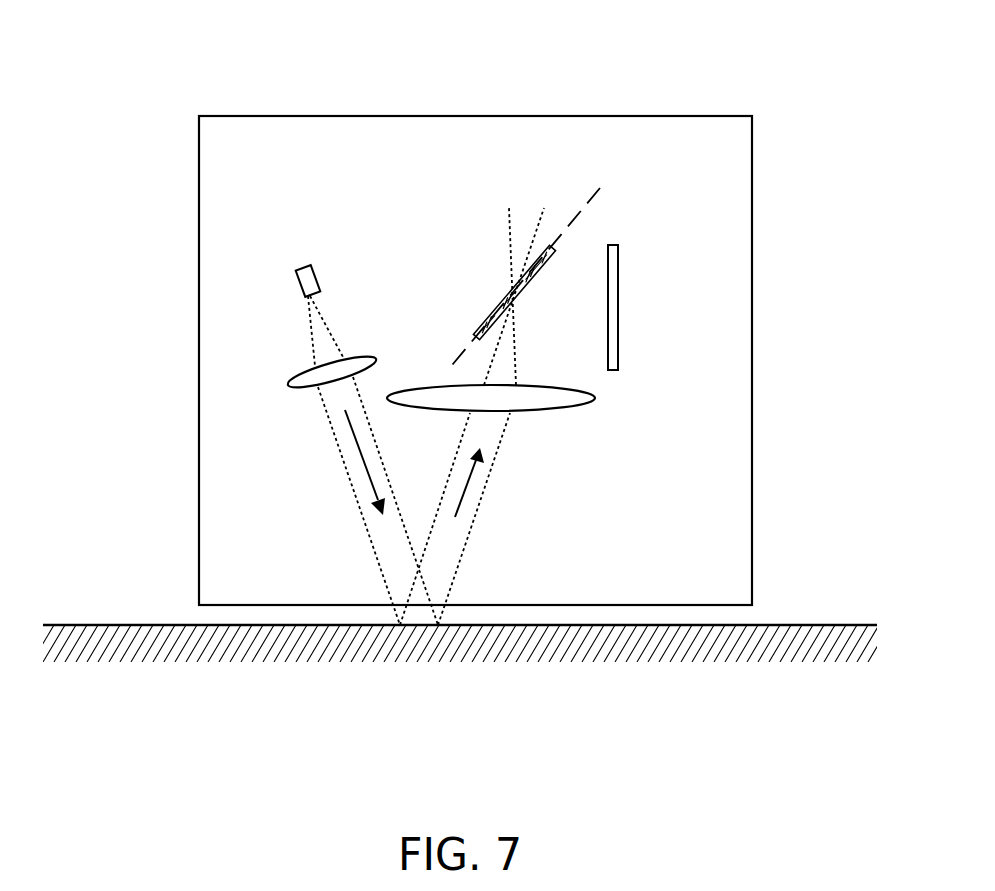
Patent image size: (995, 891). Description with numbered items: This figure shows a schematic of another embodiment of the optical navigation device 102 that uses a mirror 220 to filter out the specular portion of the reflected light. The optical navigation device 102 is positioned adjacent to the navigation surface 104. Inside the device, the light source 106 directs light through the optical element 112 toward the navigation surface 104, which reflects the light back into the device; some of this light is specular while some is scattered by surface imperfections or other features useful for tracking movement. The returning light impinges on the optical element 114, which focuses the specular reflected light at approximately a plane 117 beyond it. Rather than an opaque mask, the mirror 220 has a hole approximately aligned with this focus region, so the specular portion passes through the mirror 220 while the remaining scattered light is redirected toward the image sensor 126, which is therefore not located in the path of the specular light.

The optical navigation device 102 is at (240, 115).
The navigation surface 104 is at (804, 612).
The light source 106 is at (302, 270).
The optical element 112 is at (289, 387).
The optical element 114 is at (596, 398).
The plane 117 is at (592, 200).
The image sensor 126 is at (620, 256).
The mirror 220 is at (487, 314).